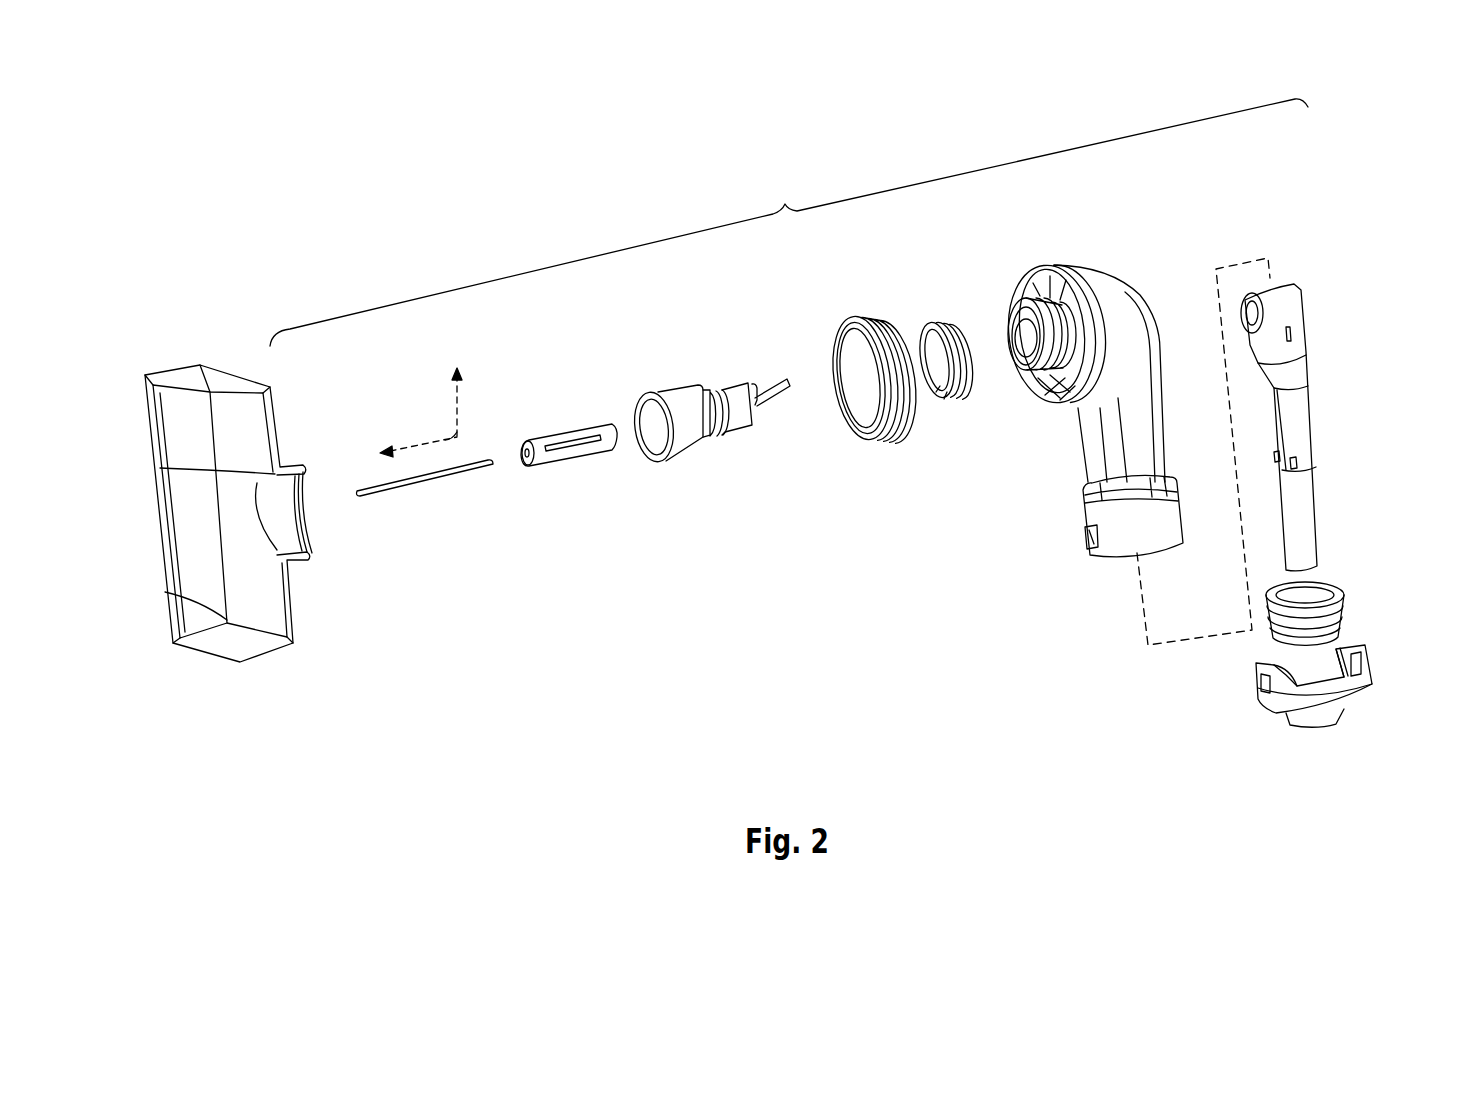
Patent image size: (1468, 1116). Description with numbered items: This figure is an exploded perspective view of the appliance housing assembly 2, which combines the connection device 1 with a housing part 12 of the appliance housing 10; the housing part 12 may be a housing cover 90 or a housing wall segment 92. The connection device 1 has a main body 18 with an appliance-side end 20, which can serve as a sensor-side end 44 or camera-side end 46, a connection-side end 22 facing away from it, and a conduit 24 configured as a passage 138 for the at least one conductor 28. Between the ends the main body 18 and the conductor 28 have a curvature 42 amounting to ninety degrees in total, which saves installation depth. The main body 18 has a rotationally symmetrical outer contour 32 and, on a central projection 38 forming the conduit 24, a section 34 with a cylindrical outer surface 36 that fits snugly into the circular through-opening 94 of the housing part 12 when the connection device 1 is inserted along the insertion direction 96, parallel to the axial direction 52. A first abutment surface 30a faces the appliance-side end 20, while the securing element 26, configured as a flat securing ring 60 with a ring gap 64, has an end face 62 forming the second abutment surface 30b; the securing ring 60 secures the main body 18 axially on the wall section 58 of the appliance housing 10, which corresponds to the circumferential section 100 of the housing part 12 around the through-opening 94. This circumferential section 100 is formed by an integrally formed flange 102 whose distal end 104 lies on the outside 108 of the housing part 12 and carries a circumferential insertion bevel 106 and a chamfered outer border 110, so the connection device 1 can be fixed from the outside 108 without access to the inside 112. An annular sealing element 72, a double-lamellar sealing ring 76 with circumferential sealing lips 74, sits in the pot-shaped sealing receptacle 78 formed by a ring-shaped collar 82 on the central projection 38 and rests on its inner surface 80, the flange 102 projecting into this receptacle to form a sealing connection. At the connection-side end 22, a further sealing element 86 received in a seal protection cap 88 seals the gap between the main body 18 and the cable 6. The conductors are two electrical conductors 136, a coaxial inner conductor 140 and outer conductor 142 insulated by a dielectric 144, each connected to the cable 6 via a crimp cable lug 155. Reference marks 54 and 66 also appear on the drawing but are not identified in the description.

The connection device 1 is at (789, 222).
The appliance housing assembly 2 is at (203, 172).
The cable 6 is at (1309, 427).
The appliance housing 10 is at (250, 493).
The housing part 12 is at (250, 493).
The main body 18 is at (1145, 300).
The appliance-side end 20 is at (1098, 407).
The connection-side end 22 is at (1094, 572).
The conduit 24 is at (1098, 407).
The securing element 26 is at (965, 360).
The conductor 28 is at (573, 464).
The first abutment surface 30a is at (1058, 408).
The second abutment surface 30b is at (965, 360).
The outer contour 32 is at (1064, 294).
The section 34 is at (1064, 270).
The cylindrical outer surface 36 is at (1035, 270).
The central projection 38 is at (1064, 270).
The curvature 42 is at (1149, 360).
The sensor-side end 44 is at (1098, 407).
The camera-side end 46 is at (1098, 407).
The axial direction 52 is at (436, 398).
The direction 54 is at (430, 440).
The wall section 58 is at (199, 449).
The securing ring 60 is at (965, 360).
The end face 62 is at (940, 322).
The ring gap 64 is at (965, 360).
The edge 66 is at (1149, 360).
The sealing element 72 is at (860, 365).
The sealing lips 74 is at (874, 320).
The double-lamellar sealing ring 76 is at (1126, 439).
The pot-shaped sealing receptacle 78 is at (1149, 360).
The inner surface 80 is at (1058, 300).
The ring-shaped collar 82 is at (1149, 360).
The further sealing element 86 is at (1350, 618).
The seal protection cap 88 is at (1368, 690).
The housing cover 90 is at (250, 493).
The housing wall segment 92 is at (250, 493).
The through-opening 94 is at (234, 526).
The insertion direction 96 is at (436, 398).
The circumferential section 100 is at (142, 456).
The flange 102 is at (302, 562).
The distal end 104 is at (332, 568).
The insertion bevel 106 is at (292, 500).
The outside 108 is at (298, 633).
The chamfered outer border 110 is at (293, 468).
The inside 112 is at (165, 592).
The electrical conductors 136 is at (573, 464).
The passage 138 is at (1098, 407).
The inner conductor 140 is at (425, 484).
The outer conductor 142 is at (690, 446).
The dielectric 144 is at (570, 455).
The crimp cable lug 155 is at (1300, 402).